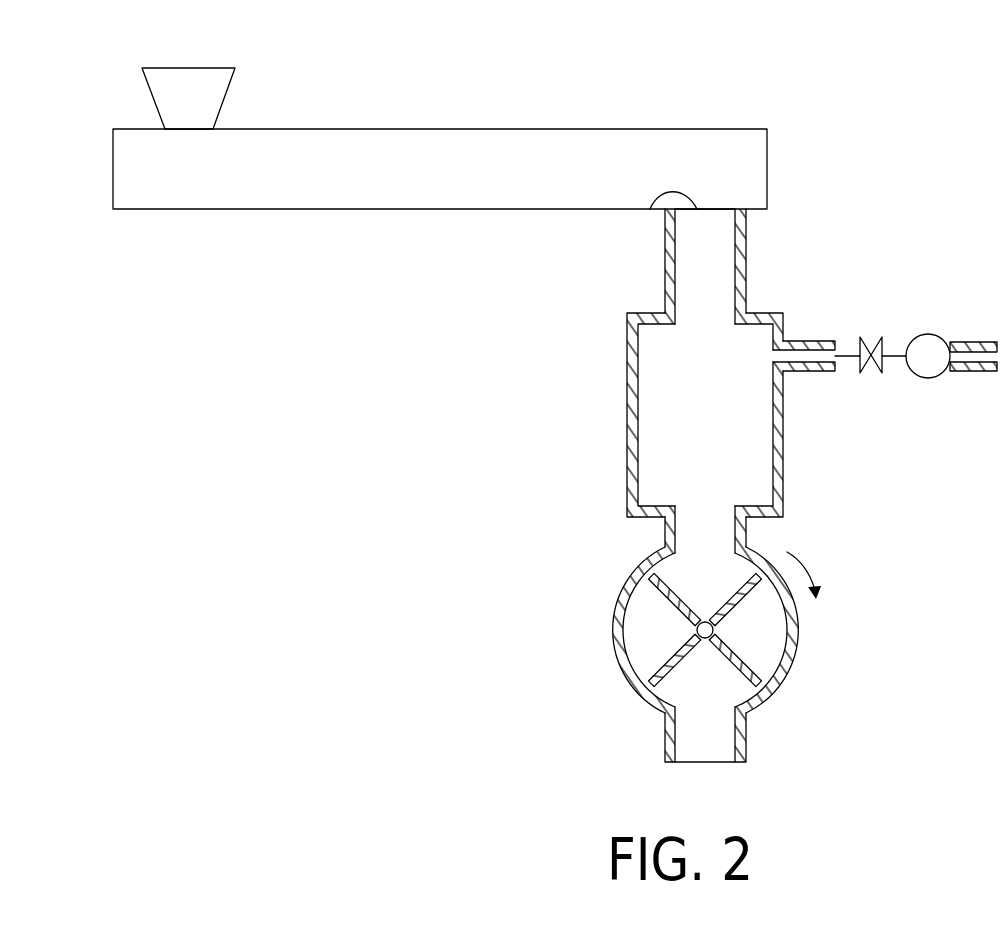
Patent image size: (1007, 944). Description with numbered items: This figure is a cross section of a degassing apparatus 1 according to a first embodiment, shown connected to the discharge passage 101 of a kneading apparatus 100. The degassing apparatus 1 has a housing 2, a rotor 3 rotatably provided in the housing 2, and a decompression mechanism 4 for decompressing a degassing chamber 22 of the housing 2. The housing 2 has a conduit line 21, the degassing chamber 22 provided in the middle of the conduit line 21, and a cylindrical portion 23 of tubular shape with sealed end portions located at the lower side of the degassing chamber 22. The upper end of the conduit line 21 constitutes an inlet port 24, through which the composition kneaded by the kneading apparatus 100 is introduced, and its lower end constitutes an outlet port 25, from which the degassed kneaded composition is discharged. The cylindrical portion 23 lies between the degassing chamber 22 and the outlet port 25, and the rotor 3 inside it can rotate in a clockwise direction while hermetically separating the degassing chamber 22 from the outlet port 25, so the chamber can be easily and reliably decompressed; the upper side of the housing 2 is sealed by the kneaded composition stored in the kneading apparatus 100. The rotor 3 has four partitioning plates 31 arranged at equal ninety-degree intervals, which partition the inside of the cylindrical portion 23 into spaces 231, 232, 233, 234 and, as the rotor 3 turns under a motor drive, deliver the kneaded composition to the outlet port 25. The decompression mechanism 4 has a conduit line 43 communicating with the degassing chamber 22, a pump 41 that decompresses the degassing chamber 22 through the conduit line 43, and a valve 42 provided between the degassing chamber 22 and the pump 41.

The kneading apparatus 100 is at (318, 102).
The discharge passage 101 is at (703, 210).
The degassing apparatus 1 is at (754, 500).
The housing 2 is at (614, 372).
The conduit line 21 is at (665, 262).
The degassing chamber 22 is at (627, 418).
The cylindrical portion 23 is at (612, 628).
The inlet port 24 is at (650, 208).
The outlet port 25 is at (705, 762).
The space 231 is at (730, 575).
The space 232 is at (762, 637).
The space 233 is at (730, 688).
The space 234 is at (650, 617).
The rotor 3 is at (766, 663).
The partitioning plate 31 is at (638, 586).
The decompression mechanism 4 is at (921, 298).
The pump 41 is at (930, 334).
The valve 42 is at (868, 337).
The conduit line 43 is at (812, 341).